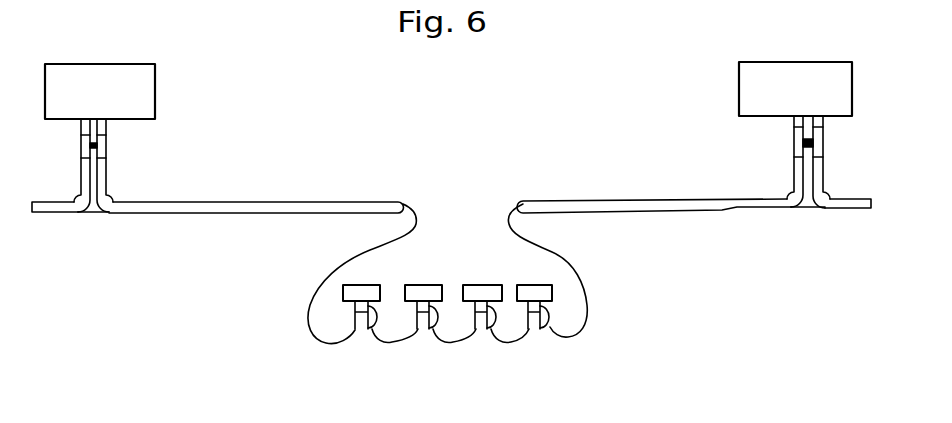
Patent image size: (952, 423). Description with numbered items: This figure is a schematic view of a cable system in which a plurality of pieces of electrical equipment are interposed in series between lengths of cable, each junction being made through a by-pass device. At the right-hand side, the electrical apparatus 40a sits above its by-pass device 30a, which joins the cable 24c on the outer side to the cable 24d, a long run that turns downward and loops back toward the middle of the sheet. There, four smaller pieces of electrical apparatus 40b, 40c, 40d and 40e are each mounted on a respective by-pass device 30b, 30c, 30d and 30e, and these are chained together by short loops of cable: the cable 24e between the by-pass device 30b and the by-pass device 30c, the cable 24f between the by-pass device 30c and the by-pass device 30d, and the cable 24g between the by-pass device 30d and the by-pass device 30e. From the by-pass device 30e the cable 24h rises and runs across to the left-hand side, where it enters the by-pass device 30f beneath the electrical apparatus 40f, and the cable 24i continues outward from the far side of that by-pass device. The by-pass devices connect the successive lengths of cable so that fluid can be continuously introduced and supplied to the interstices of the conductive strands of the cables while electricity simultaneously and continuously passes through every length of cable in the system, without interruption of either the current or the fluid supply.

The electrical apparatus 40f is at (155, 80).
The by-pass device 30f is at (107, 147).
The cable 24i is at (78, 213).
The cable 24h is at (109, 202).
The electrical apparatus 40a is at (852, 83).
The by-pass device 30a is at (823, 139).
The cable 24c is at (850, 208).
The cable 24d is at (737, 208).
The electrical apparatus 40e is at (365, 279).
The electrical apparatus 40d is at (428, 279).
The electrical apparatus 40c is at (485, 279).
The electrical apparatus 40b is at (540, 279).
The by-pass device 30e is at (372, 324).
The by-pass device 30d is at (431, 330).
The by-pass device 30c is at (492, 328).
The by-pass device 30b is at (549, 336).
The cable 24g is at (379, 343).
The cable 24f is at (453, 340).
The cable 24e is at (508, 342).